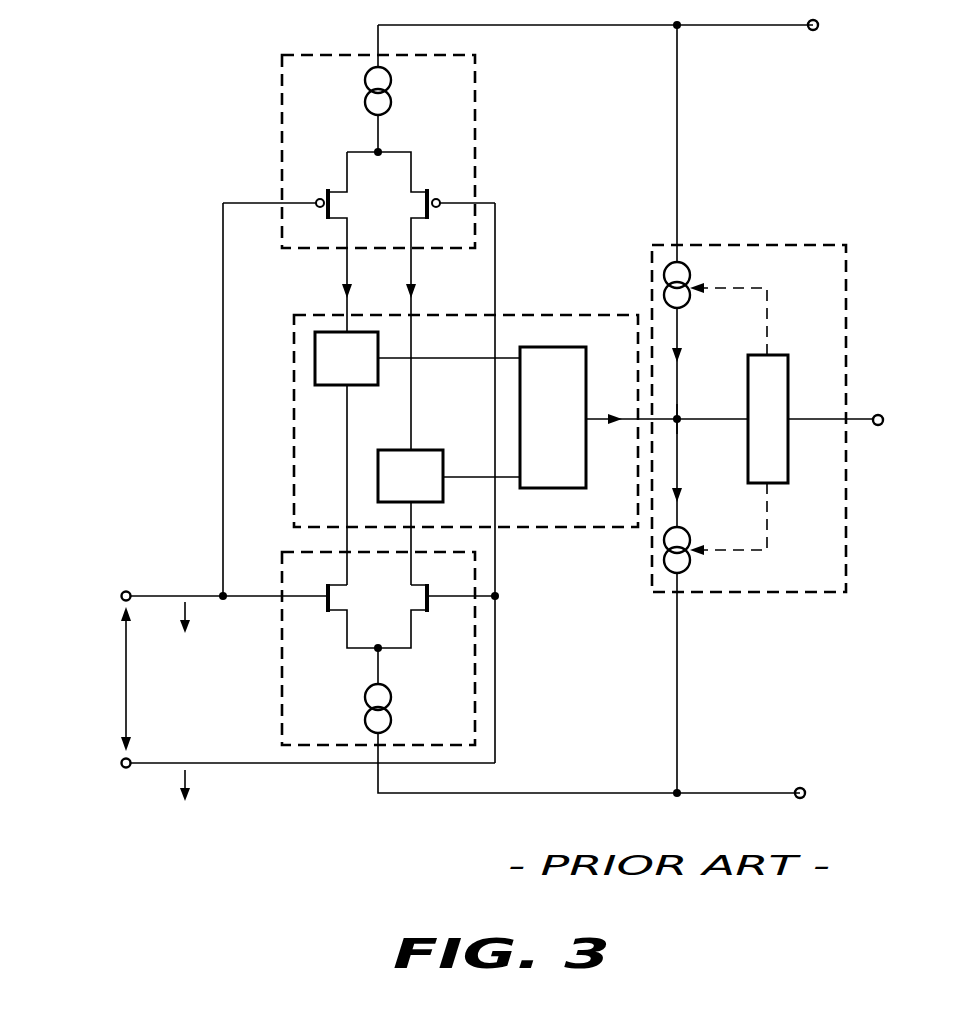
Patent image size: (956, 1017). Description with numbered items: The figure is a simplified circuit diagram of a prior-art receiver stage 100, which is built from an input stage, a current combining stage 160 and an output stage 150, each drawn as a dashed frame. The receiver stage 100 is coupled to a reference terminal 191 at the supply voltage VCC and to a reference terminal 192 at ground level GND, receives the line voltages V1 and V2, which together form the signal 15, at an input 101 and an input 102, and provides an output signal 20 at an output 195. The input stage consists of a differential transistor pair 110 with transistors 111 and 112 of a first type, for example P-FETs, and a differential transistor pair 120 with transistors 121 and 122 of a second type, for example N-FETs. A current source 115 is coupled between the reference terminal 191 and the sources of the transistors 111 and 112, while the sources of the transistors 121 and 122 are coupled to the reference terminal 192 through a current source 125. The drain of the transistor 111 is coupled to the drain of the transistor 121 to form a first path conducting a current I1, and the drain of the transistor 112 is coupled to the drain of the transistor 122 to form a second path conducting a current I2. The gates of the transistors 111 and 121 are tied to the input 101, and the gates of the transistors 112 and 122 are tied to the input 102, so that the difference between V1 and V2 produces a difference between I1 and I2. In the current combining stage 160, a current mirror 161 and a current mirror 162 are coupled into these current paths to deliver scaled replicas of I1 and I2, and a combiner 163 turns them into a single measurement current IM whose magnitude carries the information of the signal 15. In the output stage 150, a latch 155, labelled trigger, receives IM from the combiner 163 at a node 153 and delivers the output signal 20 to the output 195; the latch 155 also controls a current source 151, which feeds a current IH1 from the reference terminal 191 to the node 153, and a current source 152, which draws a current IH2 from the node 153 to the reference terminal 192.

The receiver stage 100 is at (343, 955).
The input 101 is at (121, 596).
The input 102 is at (121, 763).
The signal 15 is at (125, 679).
The differential transistor pair 110 is at (282, 125).
The transistor 111 is at (331, 187).
The transistor 112 is at (430, 187).
The current source 115 is at (365, 106).
The differential transistor pair 120 is at (282, 678).
The transistor 121 is at (331, 614).
The transistor 122 is at (430, 614).
The current source 125 is at (365, 697).
The output stage 150 is at (779, 594).
The current source 151 is at (691, 267).
The current source 152 is at (691, 527).
The node 153 is at (682, 416).
The latch 155 is at (788, 488).
The current combining stage 160 is at (294, 412).
The current mirror 161 is at (331, 371).
The current mirror 162 is at (395, 489).
The combiner 163 is at (537, 428).
The reference terminal 191 is at (752, 30).
The reference terminal 192 is at (758, 790).
The output 195 is at (882, 427).
The output signal 20 is at (814, 414).